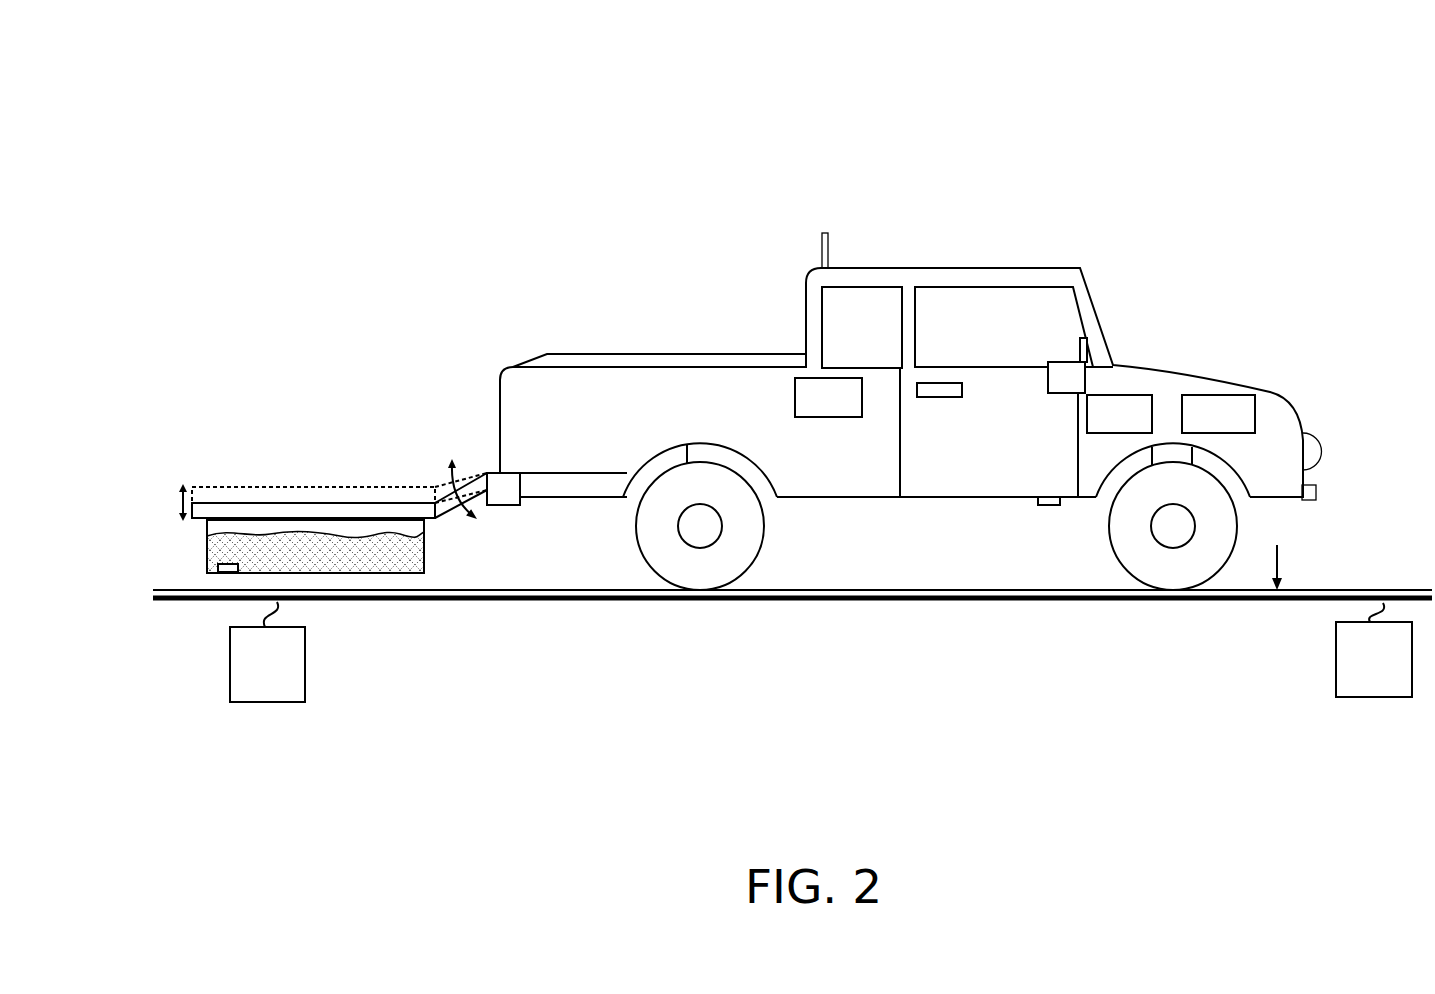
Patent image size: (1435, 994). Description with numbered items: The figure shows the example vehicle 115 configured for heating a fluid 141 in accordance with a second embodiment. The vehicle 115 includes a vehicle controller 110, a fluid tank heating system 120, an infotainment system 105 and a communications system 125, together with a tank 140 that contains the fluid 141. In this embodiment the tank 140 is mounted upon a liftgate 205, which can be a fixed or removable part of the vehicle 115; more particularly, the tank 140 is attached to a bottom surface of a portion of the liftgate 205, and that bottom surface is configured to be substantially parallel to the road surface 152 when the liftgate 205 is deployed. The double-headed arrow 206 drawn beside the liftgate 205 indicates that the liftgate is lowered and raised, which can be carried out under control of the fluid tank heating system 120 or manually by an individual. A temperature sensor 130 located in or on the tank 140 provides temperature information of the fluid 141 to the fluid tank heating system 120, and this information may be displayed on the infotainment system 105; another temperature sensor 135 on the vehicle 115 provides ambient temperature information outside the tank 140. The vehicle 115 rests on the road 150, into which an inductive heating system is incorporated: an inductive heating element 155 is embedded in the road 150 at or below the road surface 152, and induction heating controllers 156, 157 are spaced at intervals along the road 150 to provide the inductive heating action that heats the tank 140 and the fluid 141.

The infotainment system 105 is at (1080, 338).
The vehicle controller 110 is at (1119, 414).
The vehicle 115 is at (1150, 100).
The fluid tank heating system 120 is at (1218, 414).
The communications system 125 is at (828, 397).
The temperature sensor 130 is at (218, 566).
The temperature sensor 135 is at (1050, 505).
The tank 140 is at (426, 537).
The fluid 141 is at (315, 552).
The road 150 is at (1360, 537).
The road surface 152 is at (1279, 554).
The inductive heating element 155 is at (530, 600).
The induction heating controller 156 is at (267, 652).
The induction heating controller 157 is at (1374, 650).
The liftgate 205 is at (369, 472).
The vertical adjustment direction 206 is at (172, 496).